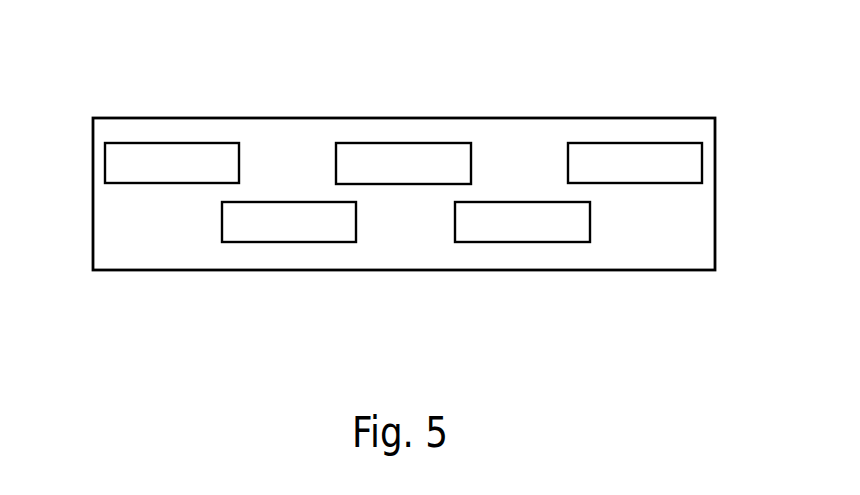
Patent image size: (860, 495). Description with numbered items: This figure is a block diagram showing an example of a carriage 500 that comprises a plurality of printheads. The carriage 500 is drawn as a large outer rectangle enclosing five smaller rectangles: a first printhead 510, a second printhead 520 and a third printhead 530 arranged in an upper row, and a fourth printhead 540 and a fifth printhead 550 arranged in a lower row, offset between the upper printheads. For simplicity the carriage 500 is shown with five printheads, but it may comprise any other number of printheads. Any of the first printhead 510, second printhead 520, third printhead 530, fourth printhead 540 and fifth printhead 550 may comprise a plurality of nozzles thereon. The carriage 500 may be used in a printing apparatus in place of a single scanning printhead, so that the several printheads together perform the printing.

The carriage 500 is at (289, 118).
The first printhead 510 is at (105, 163).
The second printhead 520 is at (414, 143).
The third printhead 530 is at (702, 165).
The fourth printhead 540 is at (258, 242).
The fifth printhead 550 is at (564, 242).